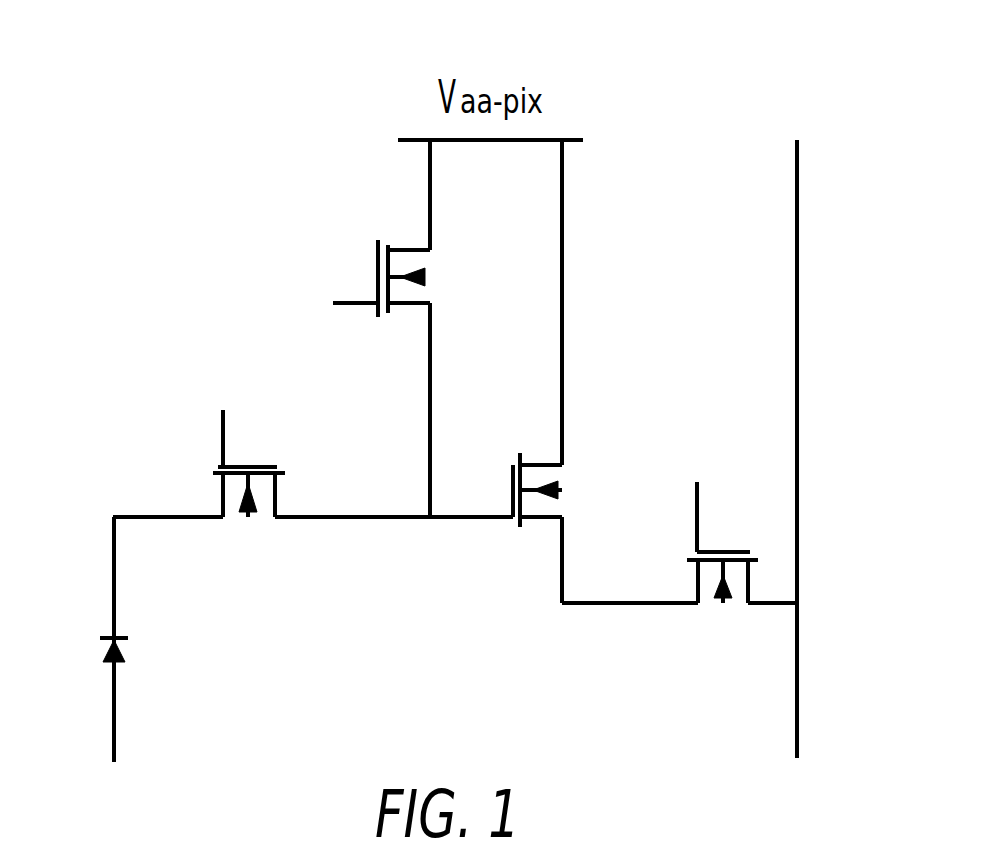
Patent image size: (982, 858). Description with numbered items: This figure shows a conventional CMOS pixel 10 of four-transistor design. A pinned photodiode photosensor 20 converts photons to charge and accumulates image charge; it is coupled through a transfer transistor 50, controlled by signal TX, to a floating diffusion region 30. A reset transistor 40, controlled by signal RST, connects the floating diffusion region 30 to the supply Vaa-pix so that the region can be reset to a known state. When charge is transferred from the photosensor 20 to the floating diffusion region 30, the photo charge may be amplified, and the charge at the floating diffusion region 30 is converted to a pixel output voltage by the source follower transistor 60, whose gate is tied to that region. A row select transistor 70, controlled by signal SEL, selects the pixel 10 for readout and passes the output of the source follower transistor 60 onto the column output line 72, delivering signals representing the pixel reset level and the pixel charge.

The CMOS pixel 10 is at (710, 78).
The pinned photodiode photosensor 20 is at (105, 645).
The floating diffusion region 30 is at (405, 518).
The reset transistor 40 is at (378, 262).
The transfer transistor 50 is at (220, 495).
The source follower transistor 60 is at (540, 465).
The row select transistor 70 is at (695, 583).
The column output line 72 is at (800, 703).